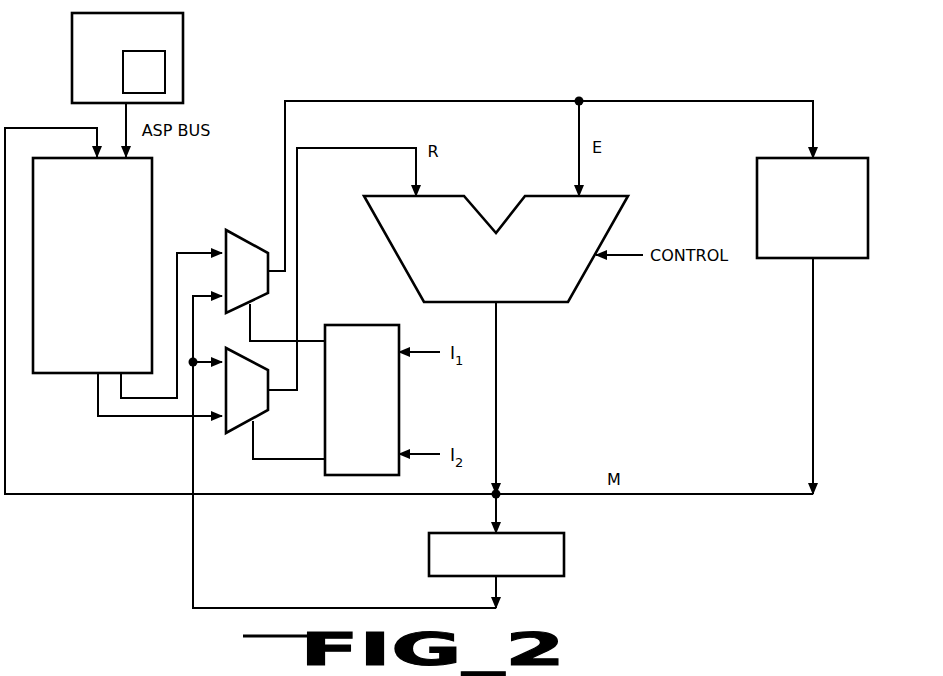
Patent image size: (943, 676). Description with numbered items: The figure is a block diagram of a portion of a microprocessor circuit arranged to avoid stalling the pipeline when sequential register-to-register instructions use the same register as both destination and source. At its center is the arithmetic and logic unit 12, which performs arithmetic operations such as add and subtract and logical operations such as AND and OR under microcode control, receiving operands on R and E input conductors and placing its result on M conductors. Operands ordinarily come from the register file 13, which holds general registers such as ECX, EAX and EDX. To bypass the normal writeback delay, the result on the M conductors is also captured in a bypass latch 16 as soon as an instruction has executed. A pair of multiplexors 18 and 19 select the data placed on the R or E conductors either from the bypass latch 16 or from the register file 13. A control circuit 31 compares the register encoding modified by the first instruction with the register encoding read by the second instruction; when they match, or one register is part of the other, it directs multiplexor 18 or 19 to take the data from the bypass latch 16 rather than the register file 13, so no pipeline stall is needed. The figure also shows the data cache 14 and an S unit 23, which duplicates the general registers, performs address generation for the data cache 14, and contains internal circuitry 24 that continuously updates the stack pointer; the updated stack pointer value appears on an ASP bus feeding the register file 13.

The S unit 23 is at (127, 58).
The internal circuitry 24 is at (144, 72).
The register file 13 is at (92, 265).
The multiplexor 19 is at (247, 271).
The multiplexor 18 is at (247, 390).
The control circuit 31 is at (362, 400).
The arithmetic and logic unit 12 is at (496, 249).
The data cache 14 is at (812, 208).
The bypass latch 16 is at (496, 554).